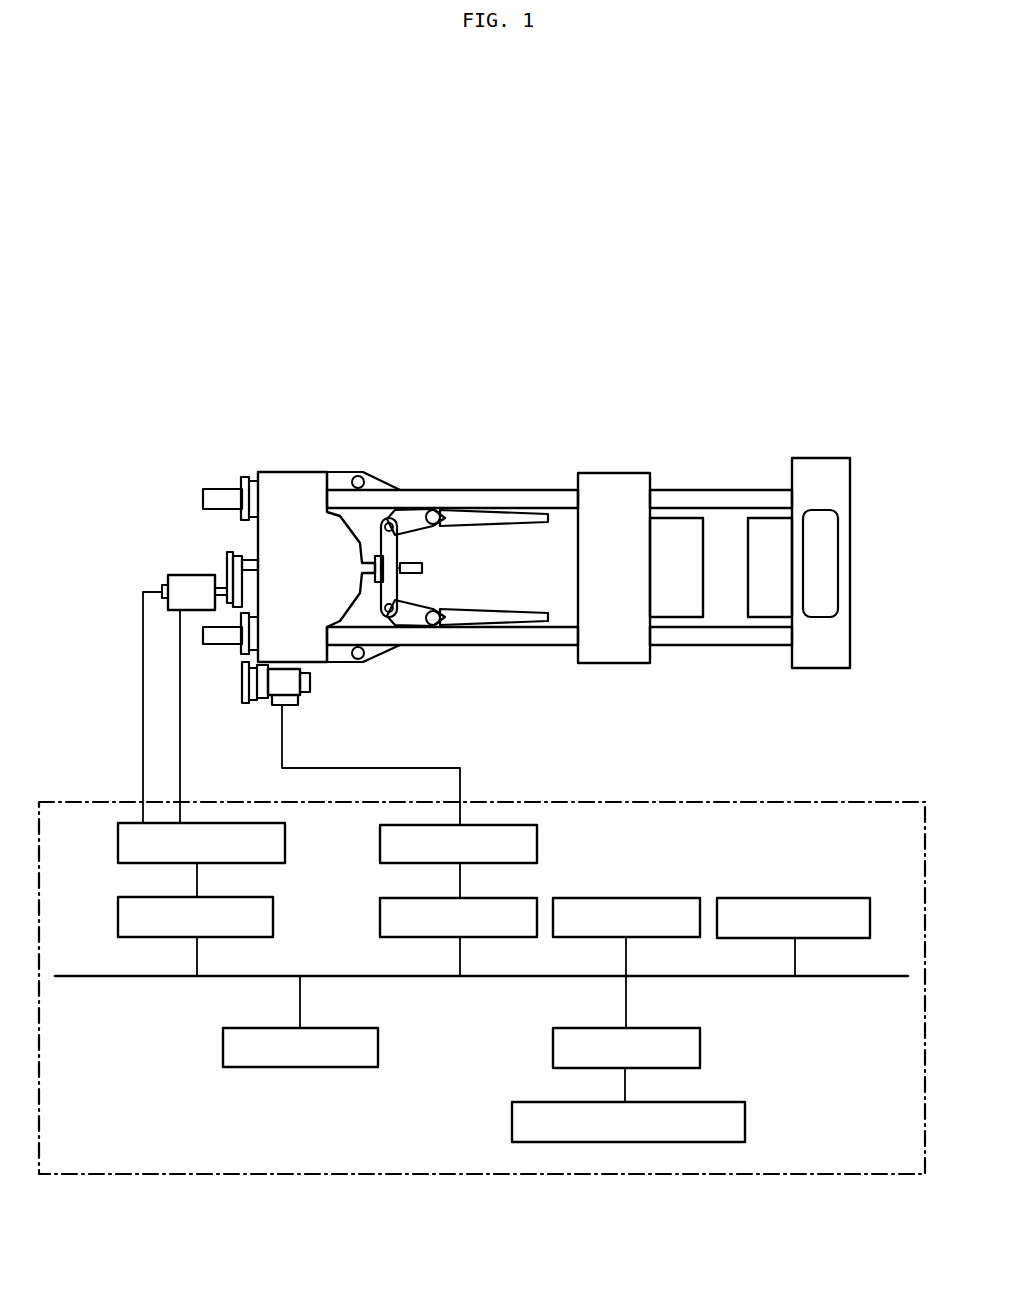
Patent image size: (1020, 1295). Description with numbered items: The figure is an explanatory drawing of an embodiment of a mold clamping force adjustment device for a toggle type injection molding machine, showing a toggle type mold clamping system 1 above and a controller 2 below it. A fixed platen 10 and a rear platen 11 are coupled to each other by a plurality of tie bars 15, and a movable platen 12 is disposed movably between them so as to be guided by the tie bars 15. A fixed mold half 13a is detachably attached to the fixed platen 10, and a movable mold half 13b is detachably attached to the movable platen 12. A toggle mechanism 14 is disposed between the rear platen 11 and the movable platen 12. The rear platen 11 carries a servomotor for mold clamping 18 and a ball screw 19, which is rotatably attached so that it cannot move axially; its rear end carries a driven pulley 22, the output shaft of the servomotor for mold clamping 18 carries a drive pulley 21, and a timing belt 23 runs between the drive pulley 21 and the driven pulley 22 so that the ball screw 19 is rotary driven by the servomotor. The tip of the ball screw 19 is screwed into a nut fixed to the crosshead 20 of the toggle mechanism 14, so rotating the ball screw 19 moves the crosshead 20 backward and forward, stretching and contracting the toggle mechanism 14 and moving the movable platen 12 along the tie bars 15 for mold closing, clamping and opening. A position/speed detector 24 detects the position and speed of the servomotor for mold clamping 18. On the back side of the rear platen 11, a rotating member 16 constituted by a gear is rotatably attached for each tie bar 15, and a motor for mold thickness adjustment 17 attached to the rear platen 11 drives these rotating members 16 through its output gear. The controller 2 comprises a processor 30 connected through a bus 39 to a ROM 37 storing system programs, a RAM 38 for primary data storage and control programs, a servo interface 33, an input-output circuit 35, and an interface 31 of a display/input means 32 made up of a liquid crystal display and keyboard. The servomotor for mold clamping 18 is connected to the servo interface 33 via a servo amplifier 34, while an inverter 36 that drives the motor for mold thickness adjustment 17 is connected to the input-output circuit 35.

The toggle type mold clamping system 1 is at (540, 408).
The controller 2 is at (513, 804).
The fixed platen 10 is at (806, 458).
The rear platen 11 is at (296, 472).
The movable platen 12 is at (598, 473).
The fixed mold half 13a is at (763, 613).
The movable mold half 13b is at (687, 612).
The toggle mechanism 14 is at (473, 477).
The tie bars 15 is at (700, 490).
The rotating member 16 is at (245, 476).
The motor for mold thickness adjustment 17 is at (300, 697).
The servomotor for mold clamping 18 is at (172, 578).
The ball screw 19 is at (237, 550).
The crosshead 20 is at (420, 560).
The drive pulley 21 is at (225, 604).
The driven pulley 22 is at (227, 565).
The timing belt 23 is at (230, 552).
The position/speed detector 24 is at (165, 590).
The processor 30 is at (379, 1048).
The interface 31 is at (700, 1048).
The display/input means 32 is at (745, 1121).
The servo interface 33 is at (273, 915).
The servo amplifier 34 is at (286, 842).
The input-output circuit 35 is at (380, 900).
The inverter 36 is at (537, 845).
The ROM 37 is at (613, 898).
The RAM 38 is at (765, 898).
The bus 39 is at (497, 978).